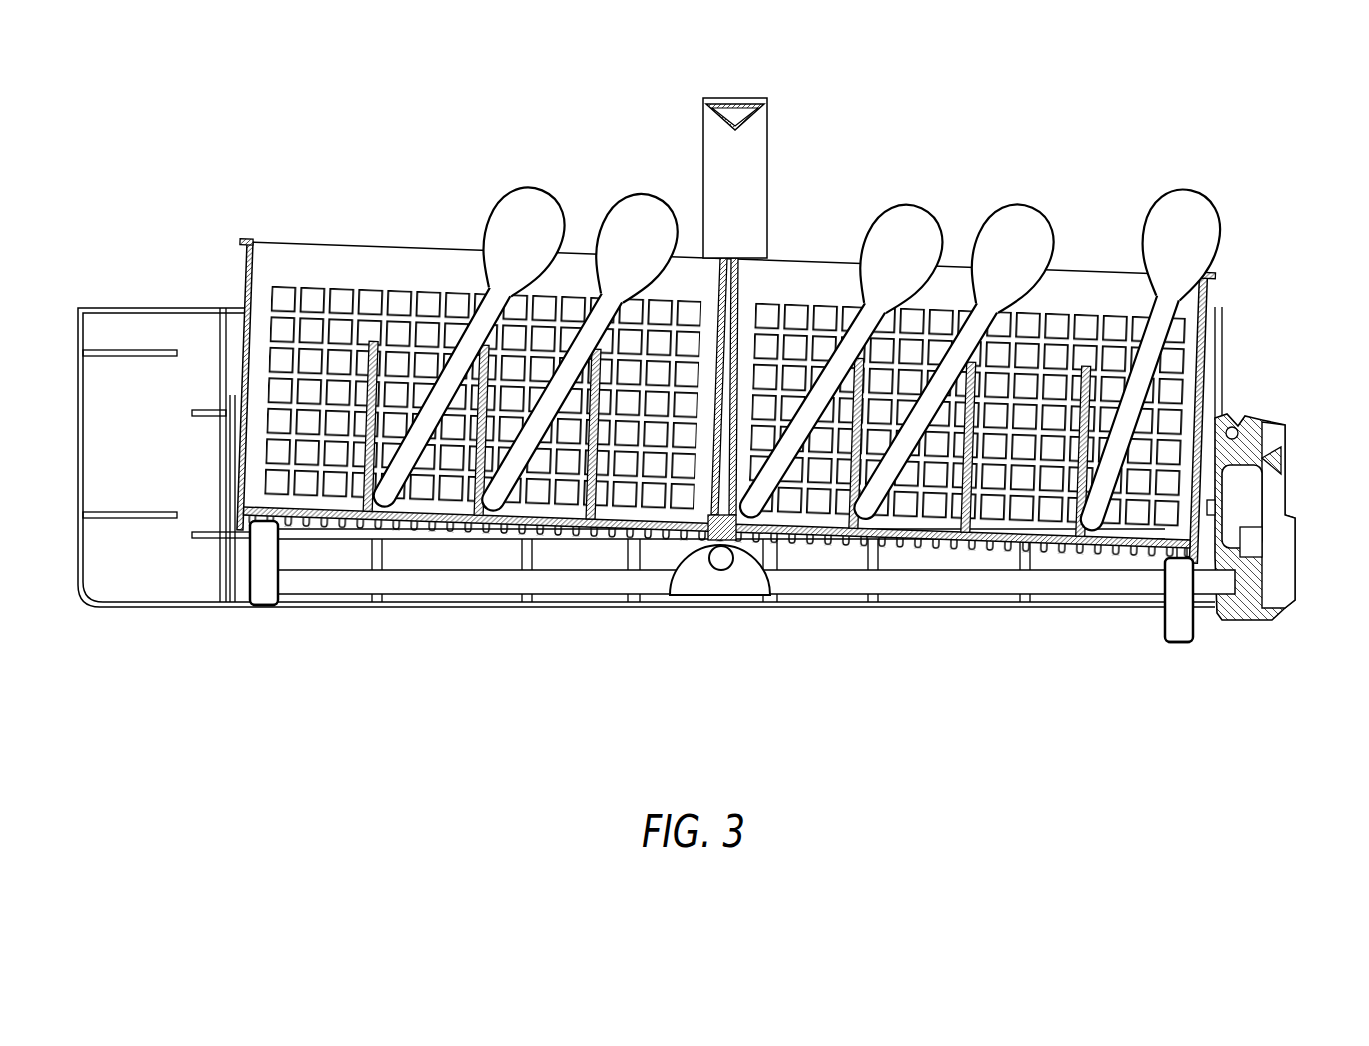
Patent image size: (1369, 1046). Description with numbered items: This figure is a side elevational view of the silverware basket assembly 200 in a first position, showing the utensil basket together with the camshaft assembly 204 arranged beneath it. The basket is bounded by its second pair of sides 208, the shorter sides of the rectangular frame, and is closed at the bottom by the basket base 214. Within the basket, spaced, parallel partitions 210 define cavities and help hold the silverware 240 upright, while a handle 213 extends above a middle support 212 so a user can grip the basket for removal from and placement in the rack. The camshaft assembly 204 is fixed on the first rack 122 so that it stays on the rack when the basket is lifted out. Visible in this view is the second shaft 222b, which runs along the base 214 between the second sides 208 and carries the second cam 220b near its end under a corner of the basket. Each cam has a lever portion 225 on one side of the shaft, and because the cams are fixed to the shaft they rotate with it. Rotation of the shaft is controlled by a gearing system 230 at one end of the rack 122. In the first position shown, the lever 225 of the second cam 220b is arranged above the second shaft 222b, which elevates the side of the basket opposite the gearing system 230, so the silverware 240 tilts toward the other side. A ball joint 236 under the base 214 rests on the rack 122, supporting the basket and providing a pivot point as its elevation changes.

The first rack 122 is at (137, 612).
The silverware basket assembly 200 is at (711, 382).
The camshaft assembly 204 is at (758, 677).
The second pair of sides 208 is at (252, 330).
The partitions 210 is at (365, 368).
The middle support 212 is at (740, 292).
The handle 213 is at (708, 128).
The basket base 214 is at (615, 533).
The second cam 220b is at (260, 609).
The second shaft 222b is at (407, 588).
The lever portion 225 is at (250, 548).
The gearing system 230 is at (1295, 466).
The ball joint 236 is at (706, 589).
The silverware 240 is at (530, 185).